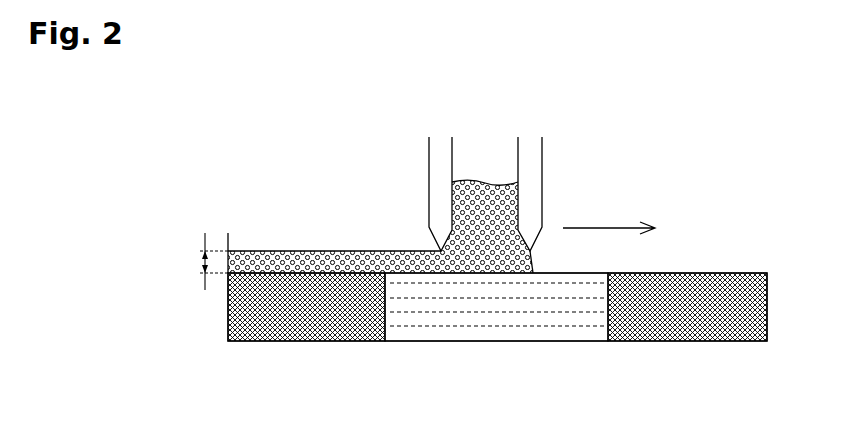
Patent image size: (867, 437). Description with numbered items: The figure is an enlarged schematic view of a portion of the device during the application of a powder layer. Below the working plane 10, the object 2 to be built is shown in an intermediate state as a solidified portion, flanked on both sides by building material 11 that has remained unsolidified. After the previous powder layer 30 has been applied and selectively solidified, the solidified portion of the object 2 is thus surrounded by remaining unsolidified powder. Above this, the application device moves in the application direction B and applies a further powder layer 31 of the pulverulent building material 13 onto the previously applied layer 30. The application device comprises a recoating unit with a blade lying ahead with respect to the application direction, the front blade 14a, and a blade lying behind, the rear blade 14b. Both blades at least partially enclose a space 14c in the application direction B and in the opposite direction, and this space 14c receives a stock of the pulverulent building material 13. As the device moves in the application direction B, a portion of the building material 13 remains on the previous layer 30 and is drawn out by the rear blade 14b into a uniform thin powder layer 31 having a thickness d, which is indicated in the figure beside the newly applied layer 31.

The object 2 is at (478, 318).
The working plane 10 is at (697, 273).
The building material 11 is at (288, 343).
The pulverulent building material 13 is at (437, 247).
The front blade 14a is at (545, 223).
The rear blade 14b is at (428, 217).
The space 14c is at (475, 167).
The powder layer 30 is at (227, 334).
The further powder layer 31 is at (255, 251).
The application direction B is at (609, 214).
The thickness d is at (205, 261).